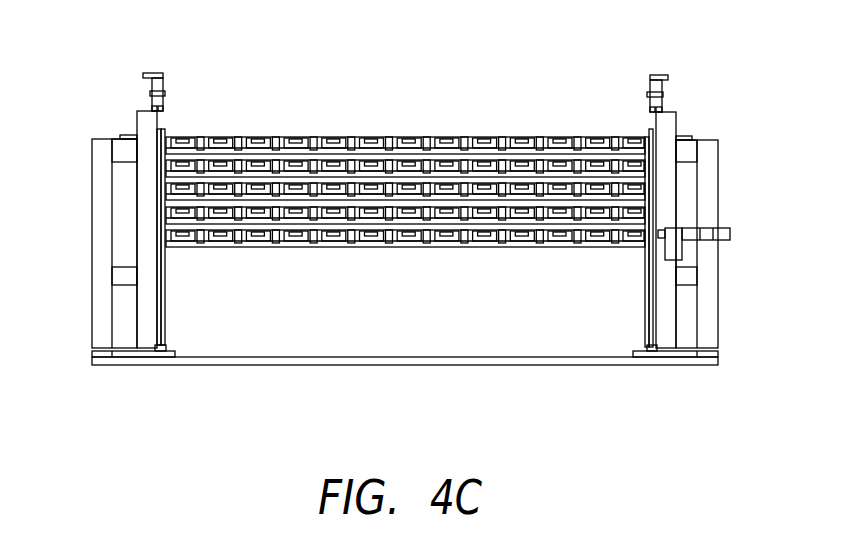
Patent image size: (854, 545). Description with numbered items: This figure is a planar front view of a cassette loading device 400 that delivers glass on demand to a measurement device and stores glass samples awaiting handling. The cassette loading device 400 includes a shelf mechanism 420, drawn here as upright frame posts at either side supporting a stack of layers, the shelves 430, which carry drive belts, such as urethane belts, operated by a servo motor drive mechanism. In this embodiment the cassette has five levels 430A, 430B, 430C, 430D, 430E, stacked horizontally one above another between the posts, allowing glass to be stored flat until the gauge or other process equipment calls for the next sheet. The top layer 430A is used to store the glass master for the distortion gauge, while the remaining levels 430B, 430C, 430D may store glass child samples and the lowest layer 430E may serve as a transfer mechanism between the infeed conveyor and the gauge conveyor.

The cassette loading device 400 is at (219, 41).
The shelf mechanism 420 is at (676, 134).
The shelves 430 is at (334, 168).
The top layer 430A is at (160, 140).
The layer 430B is at (160, 167).
The layer 430C is at (160, 192).
The layer 430D is at (160, 213).
The layer 430E is at (160, 236).